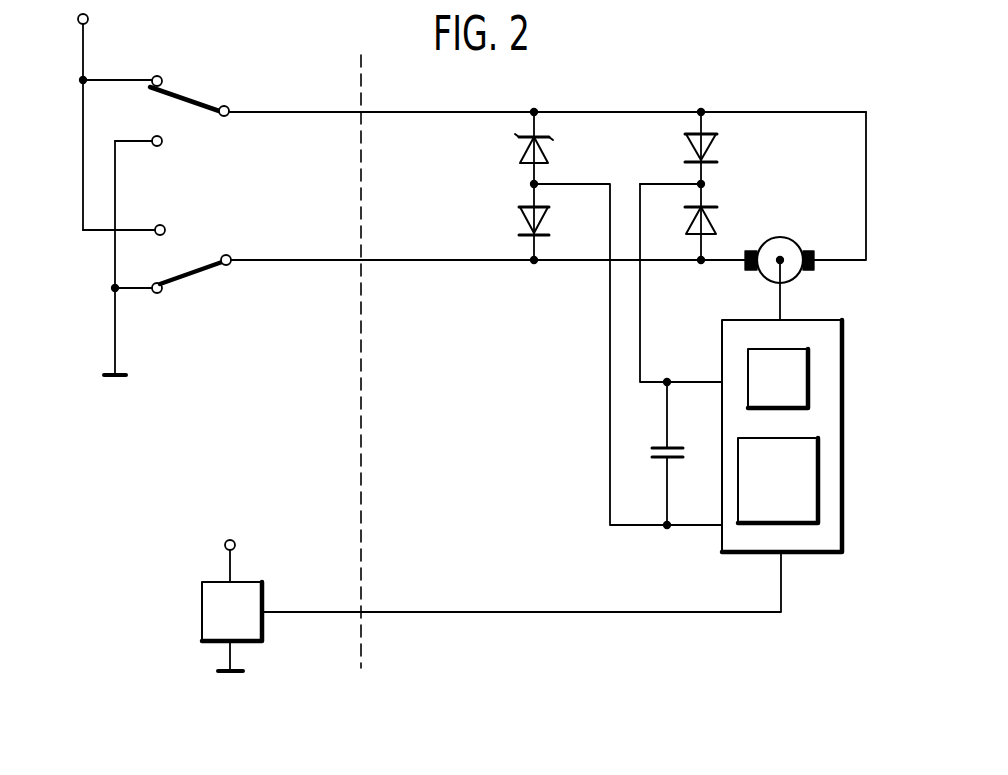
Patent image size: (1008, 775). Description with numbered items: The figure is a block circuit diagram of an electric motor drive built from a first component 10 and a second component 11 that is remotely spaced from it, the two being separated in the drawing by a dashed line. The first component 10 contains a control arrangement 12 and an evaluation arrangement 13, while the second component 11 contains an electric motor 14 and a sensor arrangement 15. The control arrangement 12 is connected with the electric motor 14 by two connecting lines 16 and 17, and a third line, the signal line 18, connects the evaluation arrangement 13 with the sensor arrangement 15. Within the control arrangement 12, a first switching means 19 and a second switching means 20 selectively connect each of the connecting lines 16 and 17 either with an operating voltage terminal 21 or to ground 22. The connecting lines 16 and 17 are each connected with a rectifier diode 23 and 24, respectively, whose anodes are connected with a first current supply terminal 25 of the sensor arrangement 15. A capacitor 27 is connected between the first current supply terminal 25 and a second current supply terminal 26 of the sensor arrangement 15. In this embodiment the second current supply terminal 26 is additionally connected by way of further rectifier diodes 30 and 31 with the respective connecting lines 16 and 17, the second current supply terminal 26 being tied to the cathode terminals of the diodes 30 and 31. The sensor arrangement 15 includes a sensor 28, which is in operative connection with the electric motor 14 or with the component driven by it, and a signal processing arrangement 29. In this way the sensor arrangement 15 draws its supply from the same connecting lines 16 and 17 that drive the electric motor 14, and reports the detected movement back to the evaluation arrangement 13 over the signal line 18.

The first component 10 is at (285, 65).
The second component 11 is at (592, 68).
The control arrangement 12 is at (292, 192).
The evaluation arrangement 13 is at (215, 603).
The electric motor 14 is at (790, 252).
The sensor arrangement 15 is at (818, 540).
The connecting line 16 is at (398, 110).
The connecting line 17 is at (398, 259).
The signal line 18 is at (430, 611).
The first switching means 19 is at (203, 114).
The second switching means 20 is at (202, 258).
The operating voltage terminal 21 is at (78, 26).
The ground 22 is at (103, 378).
The rectifier diode 23 is at (550, 152).
The rectifier diode 24 is at (550, 221).
The first current supply terminal 25 is at (697, 527).
The second current supply terminal 26 is at (694, 382).
The capacitor 27 is at (652, 452).
The sensor 28 is at (790, 380).
The signal processing arrangement 29 is at (797, 487).
The further rectifier diode 30 is at (688, 140).
The further rectifier diode 31 is at (696, 224).